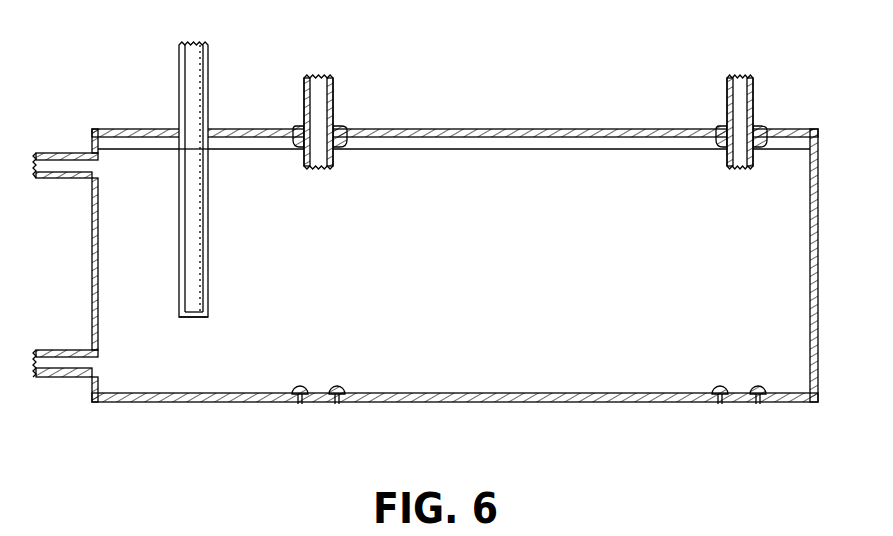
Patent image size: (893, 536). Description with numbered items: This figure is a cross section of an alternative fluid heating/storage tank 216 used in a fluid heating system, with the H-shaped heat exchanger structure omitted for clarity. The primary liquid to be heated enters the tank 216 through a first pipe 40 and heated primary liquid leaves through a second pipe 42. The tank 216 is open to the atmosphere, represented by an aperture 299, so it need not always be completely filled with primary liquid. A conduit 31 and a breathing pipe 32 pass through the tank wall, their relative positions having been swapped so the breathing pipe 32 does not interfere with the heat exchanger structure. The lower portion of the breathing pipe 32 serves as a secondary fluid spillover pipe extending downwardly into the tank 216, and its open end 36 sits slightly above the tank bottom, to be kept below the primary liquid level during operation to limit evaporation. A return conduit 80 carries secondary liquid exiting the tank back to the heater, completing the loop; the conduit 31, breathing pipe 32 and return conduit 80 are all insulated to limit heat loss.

The fluid heating/storage tank 216 is at (604, 36).
The aperture 299 is at (489, 128).
The second pipe 42 is at (57, 153).
The first pipe 40 is at (59, 378).
The breathing pipe 32 is at (179, 73).
The open end 36 is at (194, 318).
The conduit 31 is at (333, 97).
The return conduit 80 is at (753, 97).